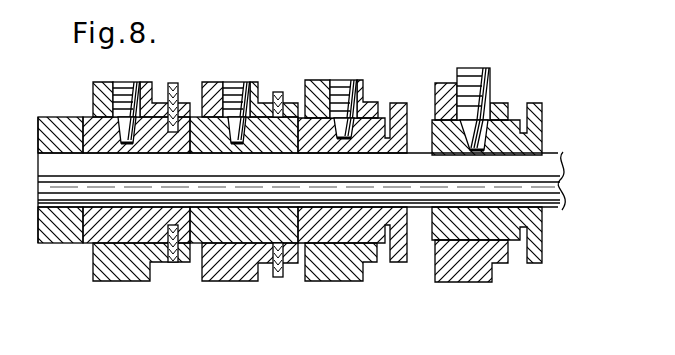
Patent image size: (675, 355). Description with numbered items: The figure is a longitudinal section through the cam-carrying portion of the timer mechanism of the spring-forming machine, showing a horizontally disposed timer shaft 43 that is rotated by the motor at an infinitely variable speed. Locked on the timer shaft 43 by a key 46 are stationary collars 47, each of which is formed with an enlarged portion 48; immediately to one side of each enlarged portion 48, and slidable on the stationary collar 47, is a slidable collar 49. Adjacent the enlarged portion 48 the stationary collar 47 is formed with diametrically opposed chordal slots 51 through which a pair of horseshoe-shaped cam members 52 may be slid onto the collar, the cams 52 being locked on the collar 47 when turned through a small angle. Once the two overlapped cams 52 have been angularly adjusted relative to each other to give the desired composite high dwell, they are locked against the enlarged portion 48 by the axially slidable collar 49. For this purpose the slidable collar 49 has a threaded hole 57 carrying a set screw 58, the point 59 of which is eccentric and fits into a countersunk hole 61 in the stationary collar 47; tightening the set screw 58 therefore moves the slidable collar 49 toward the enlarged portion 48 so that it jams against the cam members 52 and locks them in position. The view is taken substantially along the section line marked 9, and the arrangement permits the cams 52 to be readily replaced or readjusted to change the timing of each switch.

The section line 9- 9 is at (389, 103).
The timer shaft 43 is at (561, 164).
The key 46 is at (565, 192).
The stationary collar 47 is at (497, 241).
The enlarged portion 48 is at (398, 110).
The slidable collar 49 is at (310, 83).
The chordal slots 51 is at (386, 108).
The cam member 52 is at (283, 278).
The threaded hole 57 is at (476, 88).
The set screw 58 is at (341, 80).
The point 59 is at (479, 118).
The countersunk hole 61 is at (352, 140).